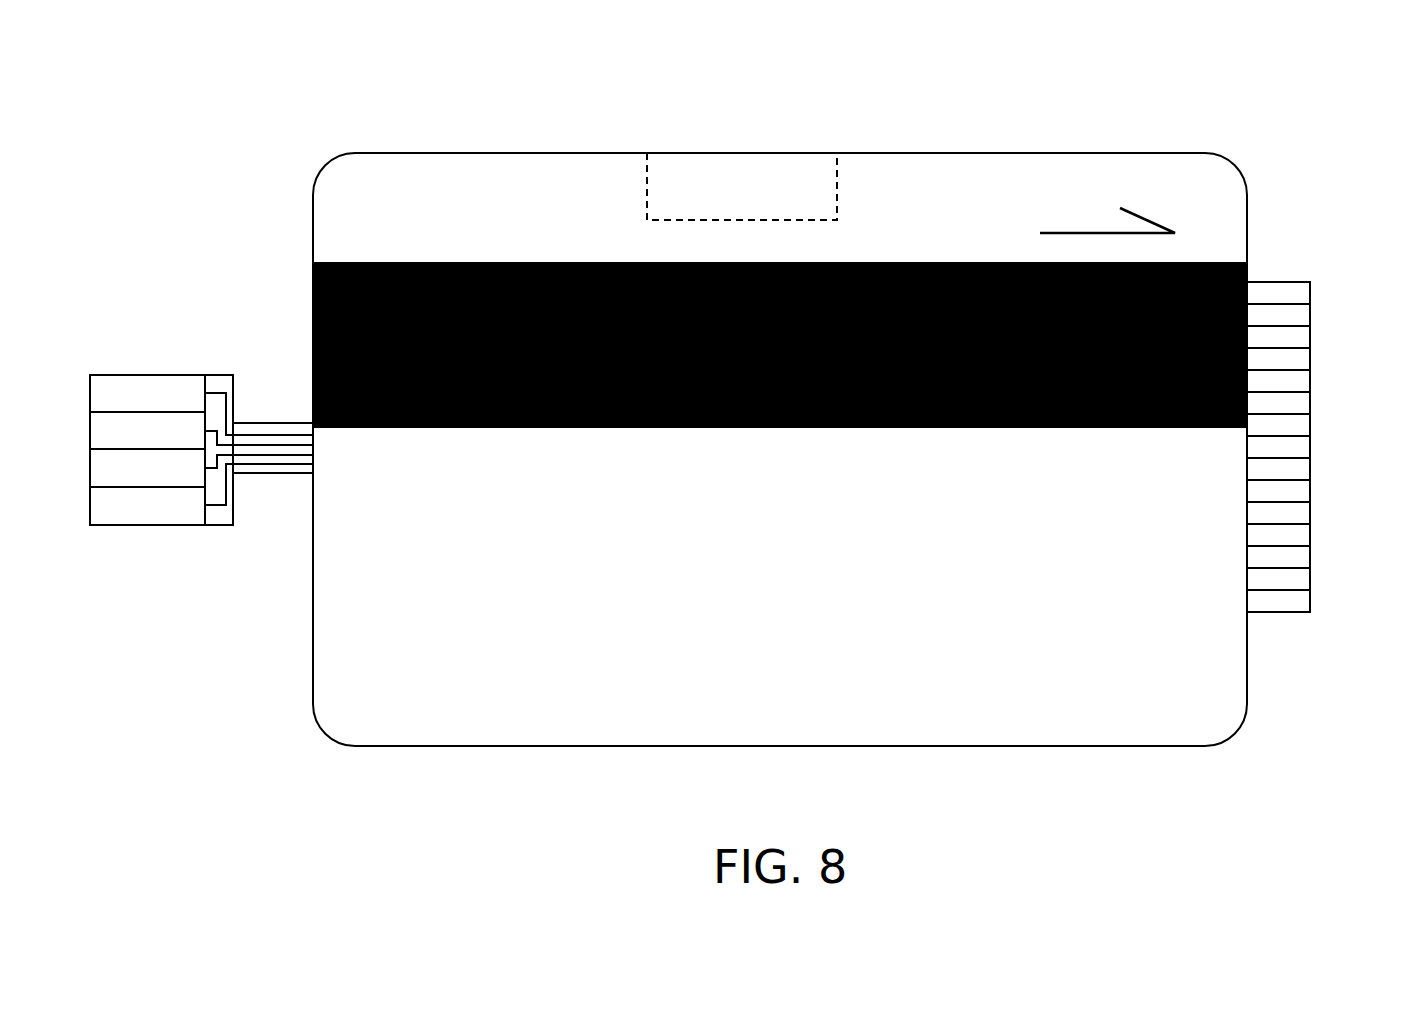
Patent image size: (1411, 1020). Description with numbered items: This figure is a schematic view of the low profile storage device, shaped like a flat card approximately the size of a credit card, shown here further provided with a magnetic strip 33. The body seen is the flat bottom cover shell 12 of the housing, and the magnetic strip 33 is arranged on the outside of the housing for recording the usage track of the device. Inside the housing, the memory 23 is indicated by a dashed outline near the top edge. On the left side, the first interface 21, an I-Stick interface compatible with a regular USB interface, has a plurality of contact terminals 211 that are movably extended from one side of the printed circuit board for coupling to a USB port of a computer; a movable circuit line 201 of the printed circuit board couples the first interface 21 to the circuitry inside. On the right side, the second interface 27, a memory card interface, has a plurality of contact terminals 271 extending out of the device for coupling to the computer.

The flat bottom cover shell 12 is at (455, 681).
The magnetic strip 33 is at (880, 262).
The memory 23 is at (717, 173).
The first interface 21 is at (185, 375).
The contact terminals 211 is at (153, 510).
The circuit line 201 is at (273, 423).
The second interface 27 is at (1310, 335).
The contact terminals 271 is at (1298, 486).